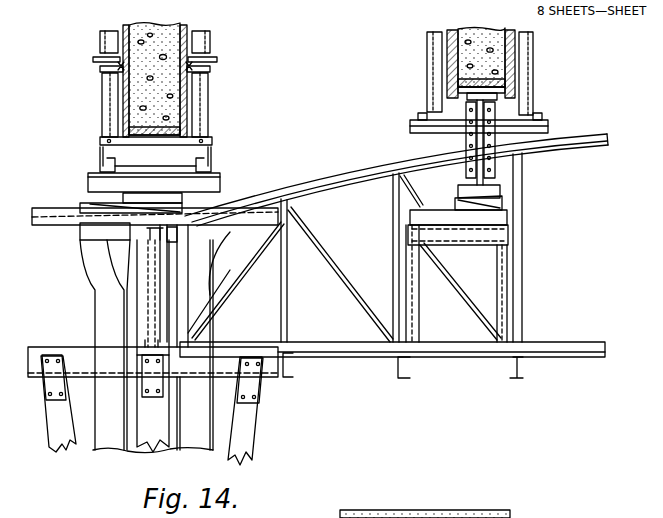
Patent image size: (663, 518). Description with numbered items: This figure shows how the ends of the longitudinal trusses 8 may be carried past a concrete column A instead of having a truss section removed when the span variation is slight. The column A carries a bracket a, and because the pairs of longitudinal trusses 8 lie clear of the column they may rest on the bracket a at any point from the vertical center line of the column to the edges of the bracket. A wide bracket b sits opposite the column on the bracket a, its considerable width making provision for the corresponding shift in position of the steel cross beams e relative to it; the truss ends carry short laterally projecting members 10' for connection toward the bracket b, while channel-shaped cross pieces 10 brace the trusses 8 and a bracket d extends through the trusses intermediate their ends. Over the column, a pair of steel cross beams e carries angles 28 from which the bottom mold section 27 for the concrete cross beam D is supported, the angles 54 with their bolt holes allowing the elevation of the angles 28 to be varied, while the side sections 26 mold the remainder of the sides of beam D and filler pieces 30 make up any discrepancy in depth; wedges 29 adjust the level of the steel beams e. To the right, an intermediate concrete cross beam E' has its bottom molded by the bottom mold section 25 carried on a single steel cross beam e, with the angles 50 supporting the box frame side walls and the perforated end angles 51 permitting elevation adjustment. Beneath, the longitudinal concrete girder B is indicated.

The concrete cross beam D is at (142, 30).
The bottom mold section 27 is at (150, 135).
The side section 26 is at (127, 113).
The steel cross beam e is at (110, 102).
The filler piece 30 is at (107, 64).
The angle with bolt holes 54 is at (200, 128).
The angle 28 is at (133, 148).
The wedge 29 is at (135, 200).
The laterally projecting member 10' is at (155, 233).
The longitudinal truss 8 is at (563, 152).
The bracket d is at (482, 237).
The concrete cross beam E' is at (514, 106).
The bottom mold section 25 is at (522, 82).
The end angle 51 is at (465, 142).
The angle 50 is at (548, 125).
The bracket a is at (230, 372).
The cross piece 10 is at (404, 382).
The concrete column A is at (110, 437).
The bracket b is at (150, 312).
The longitudinal concrete girder B is at (448, 517).